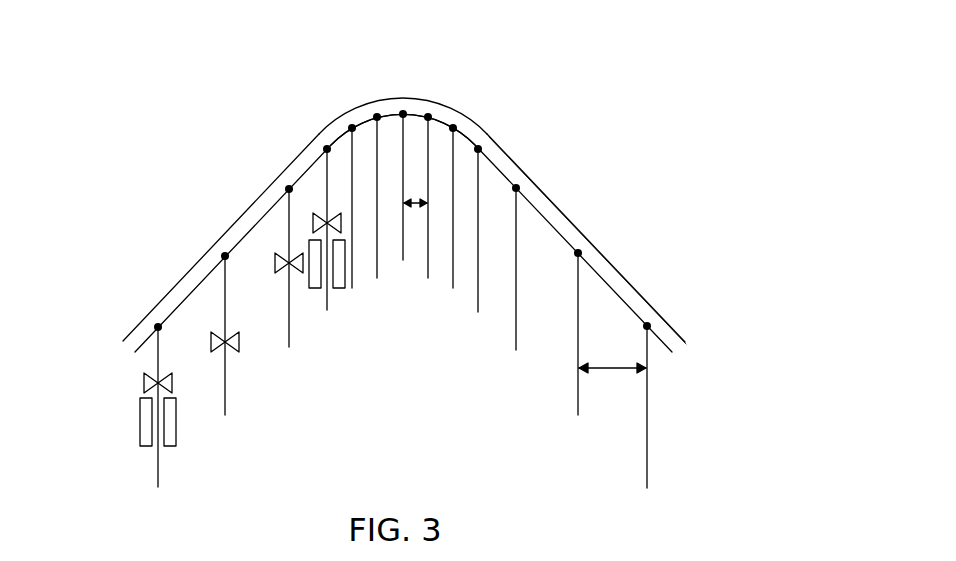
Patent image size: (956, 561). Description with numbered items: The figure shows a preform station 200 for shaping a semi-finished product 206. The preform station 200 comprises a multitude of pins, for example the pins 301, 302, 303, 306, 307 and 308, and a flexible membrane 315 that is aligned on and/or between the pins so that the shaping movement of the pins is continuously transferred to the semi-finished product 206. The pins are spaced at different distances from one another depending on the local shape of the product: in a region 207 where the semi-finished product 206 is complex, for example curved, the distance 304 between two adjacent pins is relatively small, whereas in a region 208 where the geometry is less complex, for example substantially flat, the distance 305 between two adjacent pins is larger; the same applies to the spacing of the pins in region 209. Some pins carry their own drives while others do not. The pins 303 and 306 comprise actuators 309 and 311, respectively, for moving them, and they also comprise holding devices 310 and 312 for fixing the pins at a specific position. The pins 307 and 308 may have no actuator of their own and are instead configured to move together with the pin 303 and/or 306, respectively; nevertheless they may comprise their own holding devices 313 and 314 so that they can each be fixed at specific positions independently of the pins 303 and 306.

The preform station 200 is at (737, 417).
The semi-finished product 206 is at (586, 232).
The region 207 is at (416, 95).
The region 208 is at (555, 181).
The region 209 is at (218, 236).
The pin 301 is at (403, 262).
The pin 302 is at (646, 458).
The pin 303 is at (155, 470).
The distance 304 is at (413, 213).
The distance 305 is at (620, 374).
The pin 306 is at (329, 298).
The pin 307 is at (288, 232).
The pin 308 is at (224, 305).
The actuator 309 is at (140, 430).
The holding device 310 is at (145, 383).
The actuator 311 is at (311, 292).
The holding device 312 is at (308, 213).
The holding device 313 is at (278, 270).
The holding device 314 is at (205, 352).
The flexible membrane 315 is at (629, 302).